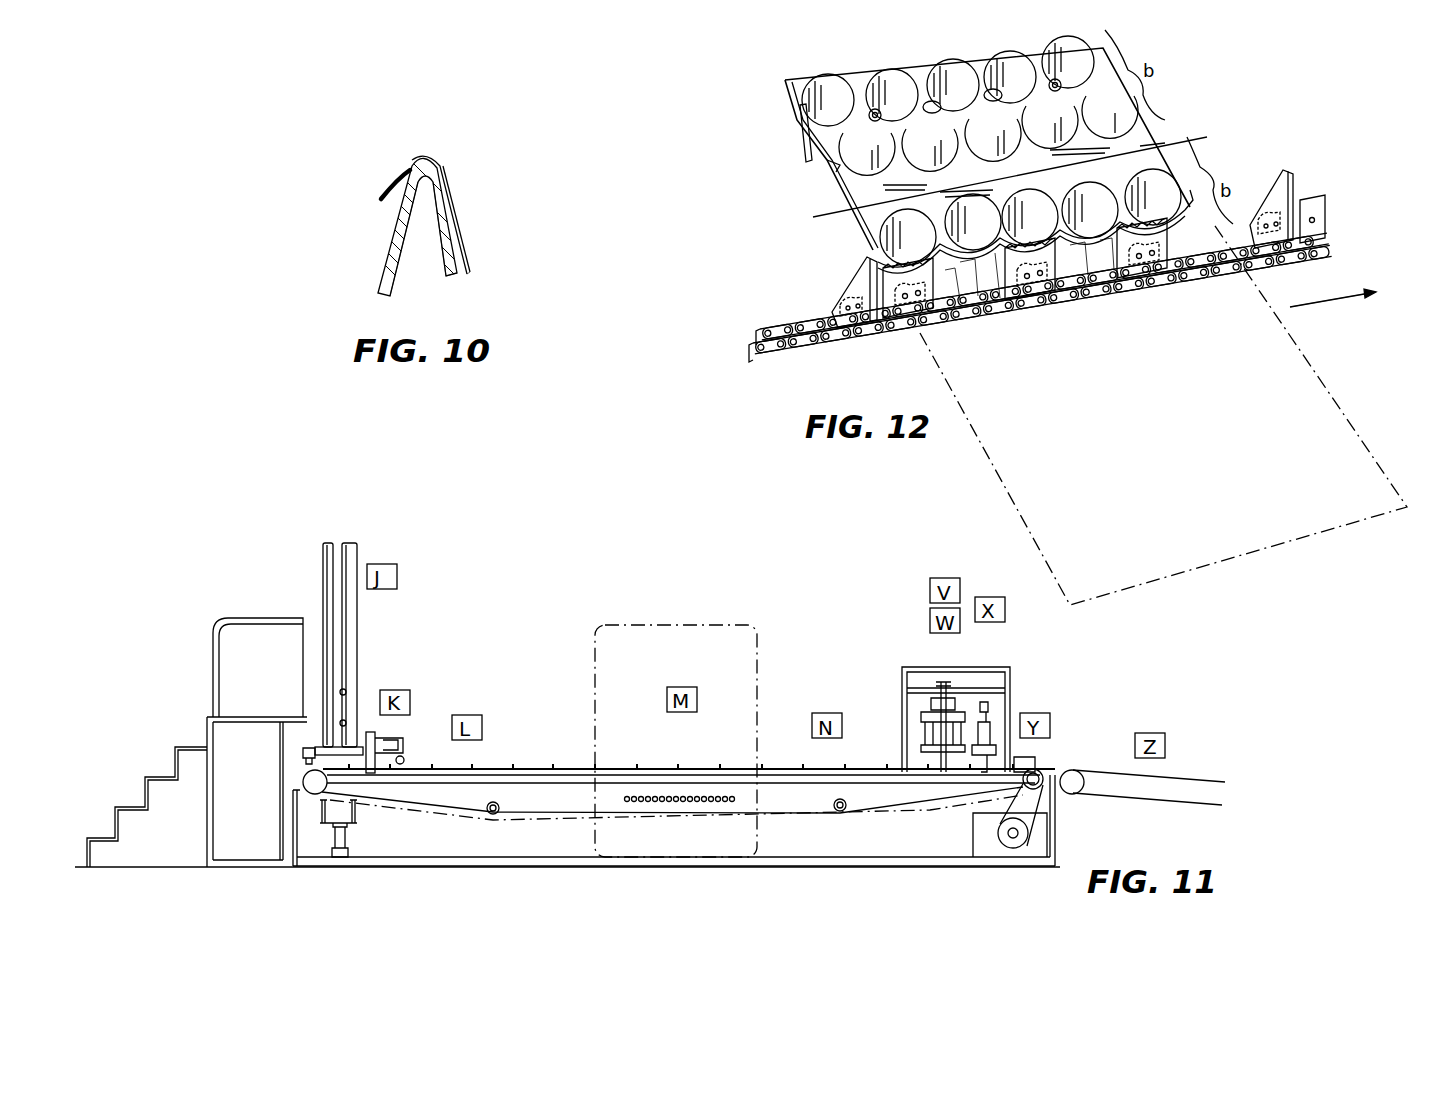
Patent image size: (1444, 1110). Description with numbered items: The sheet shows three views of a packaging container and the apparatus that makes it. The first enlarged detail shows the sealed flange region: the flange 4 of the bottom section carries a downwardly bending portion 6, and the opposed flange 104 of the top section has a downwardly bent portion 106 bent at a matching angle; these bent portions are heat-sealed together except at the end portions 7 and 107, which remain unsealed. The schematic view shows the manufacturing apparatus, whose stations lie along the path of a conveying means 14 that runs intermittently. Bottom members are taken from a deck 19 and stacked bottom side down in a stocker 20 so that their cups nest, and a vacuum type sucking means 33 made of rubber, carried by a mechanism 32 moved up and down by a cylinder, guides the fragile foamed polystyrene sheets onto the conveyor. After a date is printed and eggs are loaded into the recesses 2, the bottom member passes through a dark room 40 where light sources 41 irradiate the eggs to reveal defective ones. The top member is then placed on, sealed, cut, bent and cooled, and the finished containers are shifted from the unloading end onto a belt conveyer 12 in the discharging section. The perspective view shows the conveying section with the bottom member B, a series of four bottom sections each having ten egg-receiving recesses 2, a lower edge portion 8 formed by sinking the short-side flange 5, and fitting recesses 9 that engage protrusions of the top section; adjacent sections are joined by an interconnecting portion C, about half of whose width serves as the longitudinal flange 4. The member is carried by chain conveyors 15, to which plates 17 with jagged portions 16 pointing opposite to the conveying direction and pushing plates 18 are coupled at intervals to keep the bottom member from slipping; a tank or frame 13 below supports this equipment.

In FIG. 12, the egg-receiving recesses 2 is at (957, 77).
In FIG. 10, the flange 4 is at (435, 217).
In FIG. 12, the flange 4 is at (873, 70).
In FIG. 12, the flange 5 is at (808, 162).
In FIG. 10, the downwardly bending portion 6 is at (440, 243).
In FIG. 10, the end portion 7 is at (448, 278).
In FIG. 12, the lower edge portion 8 is at (800, 135).
In FIG. 12, the fitting recesses 9 is at (869, 113).
In FIG. 11, the belt conveyer 12 is at (1177, 778).
In FIG. 11, the tank 13 is at (296, 812).
In FIG. 12, the conveying means 14 is at (1340, 243).
In FIG. 11, the conveying means 14 is at (527, 768).
In FIG. 12, the chain conveyors 15 is at (1185, 291).
In FIG. 12, the jagged portion 16 is at (1027, 272).
In FIG. 12, the plates 17 is at (1050, 283).
In FIG. 12, the pushing plates 18 is at (852, 290).
In FIG. 11, the deck 19 is at (265, 717).
In FIG. 11, the stocker 20 is at (348, 545).
In FIG. 11, the mechanism 32 is at (348, 844).
In FIG. 11, the vacuum type sucking means 33 is at (355, 810).
In FIG. 11, the dark room 40 is at (703, 625).
In FIG. 11, the light sources 41 is at (707, 803).
In FIG. 10, the flange 104 is at (449, 165).
In FIG. 10, the downwardly bent portion 106 is at (457, 230).
In FIG. 10, the end portion 107 is at (465, 278).
In FIG. 12, the bottom member B is at (916, 53).
In FIG. 12, the interconnecting portion C is at (1150, 143).